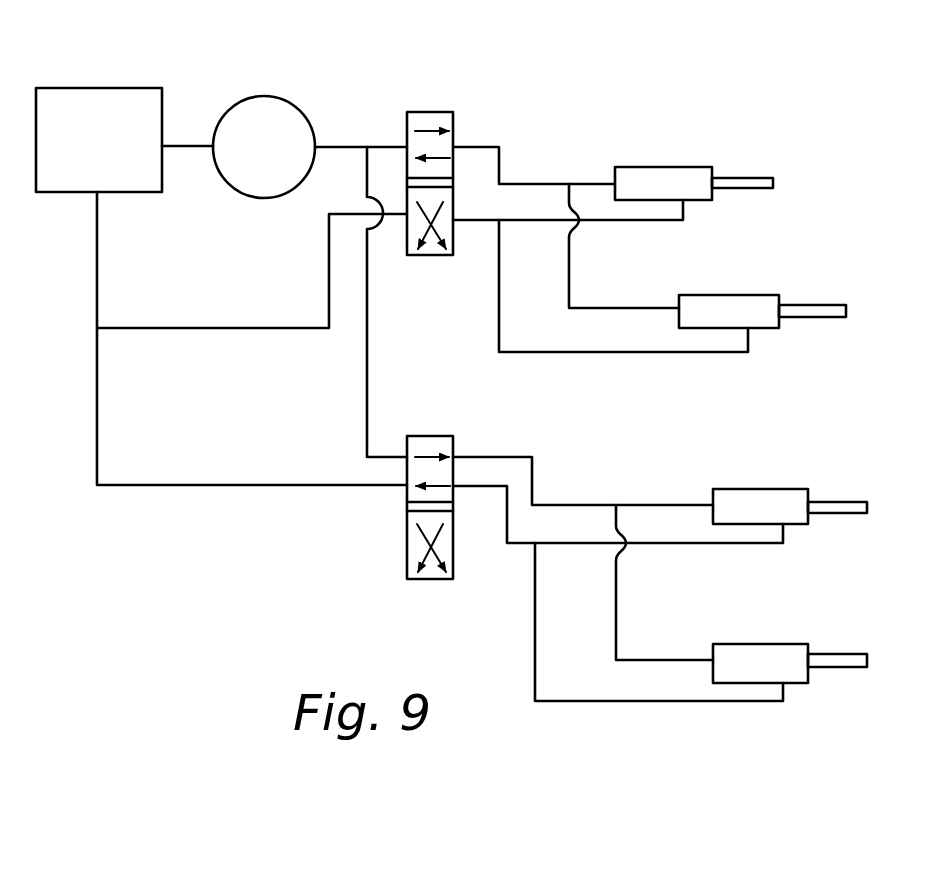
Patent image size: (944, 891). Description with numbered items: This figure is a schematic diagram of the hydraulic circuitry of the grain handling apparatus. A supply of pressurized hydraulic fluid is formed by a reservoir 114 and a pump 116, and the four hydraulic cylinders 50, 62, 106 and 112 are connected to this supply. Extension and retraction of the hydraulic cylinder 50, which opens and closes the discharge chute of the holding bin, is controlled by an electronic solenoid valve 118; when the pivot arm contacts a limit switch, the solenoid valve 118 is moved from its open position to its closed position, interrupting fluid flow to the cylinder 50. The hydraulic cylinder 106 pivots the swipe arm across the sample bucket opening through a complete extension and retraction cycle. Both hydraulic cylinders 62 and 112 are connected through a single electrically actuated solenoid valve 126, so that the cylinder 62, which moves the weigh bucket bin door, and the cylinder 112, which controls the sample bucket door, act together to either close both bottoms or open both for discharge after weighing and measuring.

The reservoir 114 is at (103, 93).
The pump 116 is at (262, 103).
The electronic solenoid valve 118 is at (428, 112).
The electrically actuated solenoid valve 126 is at (426, 436).
The hydraulic cylinder 50 is at (650, 167).
The hydraulic cylinder 106 is at (702, 296).
The hydraulic cylinder 62 is at (730, 489).
The hydraulic cylinder 112 is at (736, 644).